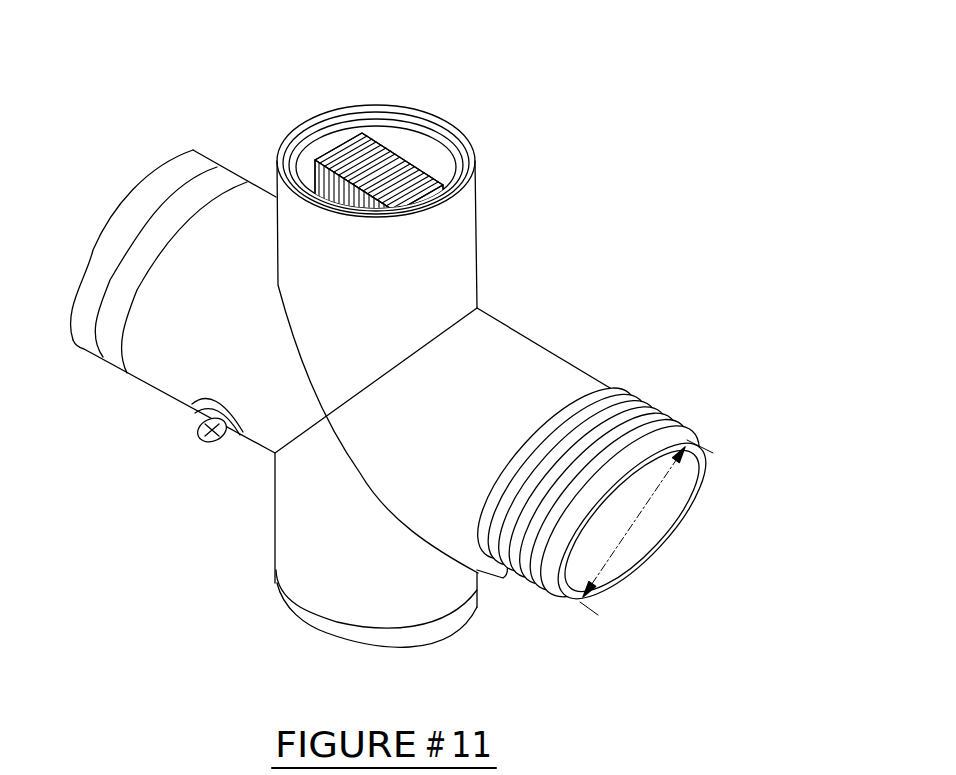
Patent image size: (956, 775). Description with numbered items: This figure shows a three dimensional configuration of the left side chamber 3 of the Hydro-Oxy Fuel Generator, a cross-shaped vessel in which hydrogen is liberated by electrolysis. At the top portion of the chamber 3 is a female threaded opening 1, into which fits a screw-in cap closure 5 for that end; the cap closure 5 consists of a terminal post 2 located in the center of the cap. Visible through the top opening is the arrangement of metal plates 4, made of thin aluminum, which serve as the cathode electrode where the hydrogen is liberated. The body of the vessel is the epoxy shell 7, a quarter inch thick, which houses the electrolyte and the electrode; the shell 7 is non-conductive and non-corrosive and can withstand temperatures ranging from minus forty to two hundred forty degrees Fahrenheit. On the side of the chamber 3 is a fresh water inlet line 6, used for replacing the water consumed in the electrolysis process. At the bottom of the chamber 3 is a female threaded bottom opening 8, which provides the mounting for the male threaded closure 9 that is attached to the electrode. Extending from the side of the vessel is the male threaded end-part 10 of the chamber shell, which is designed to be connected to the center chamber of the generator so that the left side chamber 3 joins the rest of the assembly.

The female threaded opening 1 is at (323, 121).
The terminal post 2 is at (163, 166).
The chamber 3 is at (459, 118).
The metal plates 4 is at (385, 158).
The screw-in cap closure 5 is at (72, 343).
The fresh water inlet line 6 is at (217, 446).
The epoxy shell 7 is at (293, 514).
The female threaded bottom opening 8 is at (287, 566).
The male threaded closure 9 is at (293, 613).
The male threaded end-part 10 is at (515, 576).